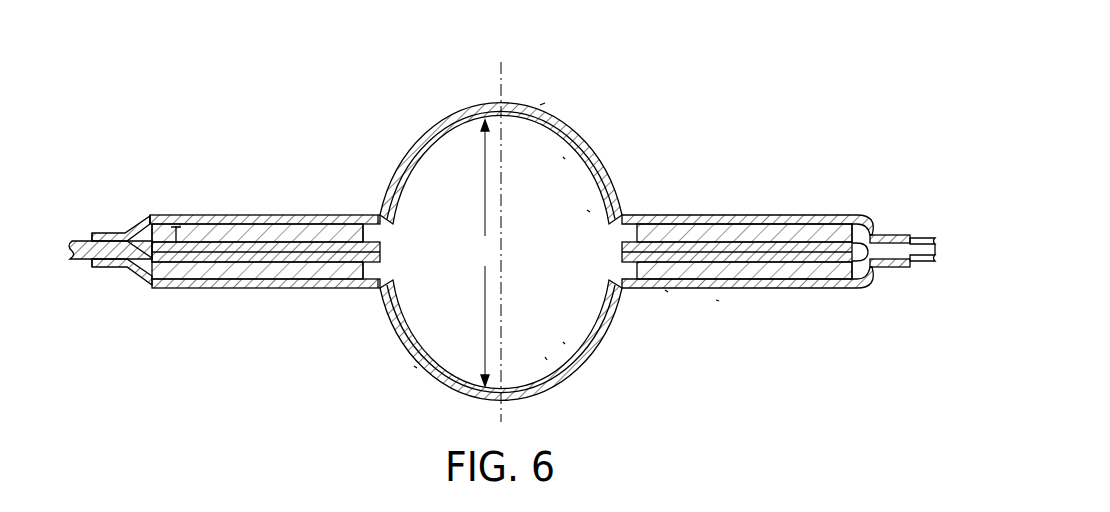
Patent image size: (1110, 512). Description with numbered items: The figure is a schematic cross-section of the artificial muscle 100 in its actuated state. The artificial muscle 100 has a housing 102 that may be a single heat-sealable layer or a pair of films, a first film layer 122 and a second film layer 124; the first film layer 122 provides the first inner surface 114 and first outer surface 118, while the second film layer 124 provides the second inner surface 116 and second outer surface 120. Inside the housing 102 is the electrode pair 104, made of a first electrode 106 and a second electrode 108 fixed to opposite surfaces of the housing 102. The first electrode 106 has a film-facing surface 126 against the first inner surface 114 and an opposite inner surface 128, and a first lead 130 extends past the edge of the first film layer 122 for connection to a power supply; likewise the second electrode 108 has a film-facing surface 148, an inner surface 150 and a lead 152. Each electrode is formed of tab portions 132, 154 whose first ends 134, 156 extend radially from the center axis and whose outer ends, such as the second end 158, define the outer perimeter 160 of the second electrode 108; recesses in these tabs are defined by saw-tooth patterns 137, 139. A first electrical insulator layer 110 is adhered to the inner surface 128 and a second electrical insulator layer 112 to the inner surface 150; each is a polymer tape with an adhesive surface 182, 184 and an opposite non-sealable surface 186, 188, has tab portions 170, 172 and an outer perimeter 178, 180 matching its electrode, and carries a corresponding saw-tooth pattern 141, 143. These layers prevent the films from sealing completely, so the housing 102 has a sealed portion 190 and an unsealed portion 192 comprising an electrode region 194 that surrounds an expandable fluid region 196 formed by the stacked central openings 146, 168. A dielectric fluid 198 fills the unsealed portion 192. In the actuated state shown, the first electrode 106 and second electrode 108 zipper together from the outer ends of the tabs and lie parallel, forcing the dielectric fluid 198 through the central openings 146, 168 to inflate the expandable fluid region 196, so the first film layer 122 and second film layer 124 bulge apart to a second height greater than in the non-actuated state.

The artificial muscle 100 is at (284, 143).
The housing 102 is at (122, 178).
The electrode pair 104 is at (829, 302).
The first electrode 106 is at (719, 303).
The second electrode 108 is at (738, 197).
The first electrical insulator layer 110 is at (561, 340).
The second electrical insulator layer 112 is at (561, 160).
The first inner surface 114 is at (150, 274).
The second inner surface 116 is at (121, 234).
The first outer surface 118 is at (117, 270).
The second outer surface 120 is at (92, 236).
The first film layer 122 is at (412, 368).
The second film layer 124 is at (413, 118).
The film-facing surface 126 is at (244, 267).
The inner surface 128 is at (205, 263).
The first lead 130 is at (80, 265).
The tab portions 132 is at (289, 292).
The first end 134 is at (375, 284).
The saw-tooth pattern 137 is at (838, 272).
The saw-tooth pattern 139 is at (178, 226).
The saw-tooth pattern 141 is at (802, 266).
The saw-tooth pattern 143 is at (219, 226).
The central opening 146 is at (425, 316).
The film-facing surface 148 is at (238, 228).
The inner surface 150 is at (287, 233).
The lead 152 is at (925, 254).
The tab portion 154 is at (327, 213).
The first end 156 is at (378, 224).
The second end 158 is at (152, 236).
The outer perimeter 160 is at (135, 233).
The central opening 168 is at (592, 206).
The tab portions 170 is at (765, 263).
The tab portions 172 is at (827, 236).
The outer perimeter 178 is at (873, 268).
The outer perimeter 180 is at (871, 236).
The adhesive surface 182 is at (681, 258).
The adhesive surface 184 is at (690, 252).
The non-sealable surface 186 is at (455, 362).
The non-sealable surface 188 is at (460, 146).
The sealed portion 190 is at (924, 249).
The unsealed portion 192 is at (789, 210).
The electrode region 194 is at (662, 294).
The expandable fluid region 196 is at (547, 117).
The dielectric fluid 198 is at (548, 358).